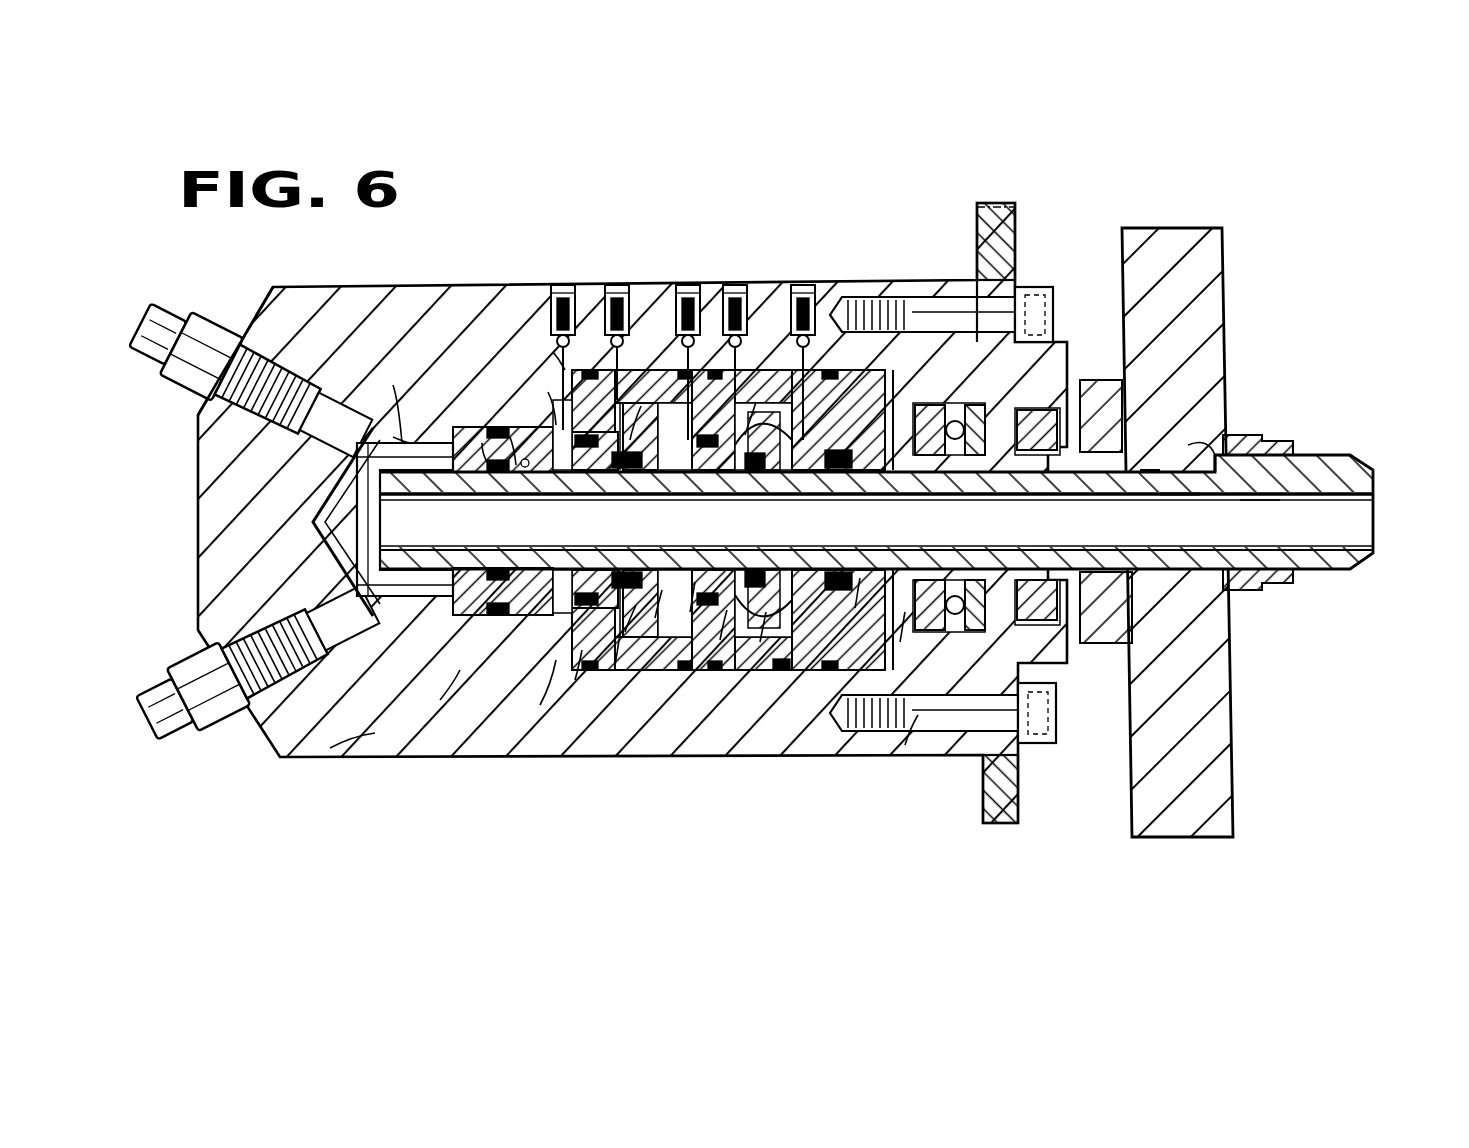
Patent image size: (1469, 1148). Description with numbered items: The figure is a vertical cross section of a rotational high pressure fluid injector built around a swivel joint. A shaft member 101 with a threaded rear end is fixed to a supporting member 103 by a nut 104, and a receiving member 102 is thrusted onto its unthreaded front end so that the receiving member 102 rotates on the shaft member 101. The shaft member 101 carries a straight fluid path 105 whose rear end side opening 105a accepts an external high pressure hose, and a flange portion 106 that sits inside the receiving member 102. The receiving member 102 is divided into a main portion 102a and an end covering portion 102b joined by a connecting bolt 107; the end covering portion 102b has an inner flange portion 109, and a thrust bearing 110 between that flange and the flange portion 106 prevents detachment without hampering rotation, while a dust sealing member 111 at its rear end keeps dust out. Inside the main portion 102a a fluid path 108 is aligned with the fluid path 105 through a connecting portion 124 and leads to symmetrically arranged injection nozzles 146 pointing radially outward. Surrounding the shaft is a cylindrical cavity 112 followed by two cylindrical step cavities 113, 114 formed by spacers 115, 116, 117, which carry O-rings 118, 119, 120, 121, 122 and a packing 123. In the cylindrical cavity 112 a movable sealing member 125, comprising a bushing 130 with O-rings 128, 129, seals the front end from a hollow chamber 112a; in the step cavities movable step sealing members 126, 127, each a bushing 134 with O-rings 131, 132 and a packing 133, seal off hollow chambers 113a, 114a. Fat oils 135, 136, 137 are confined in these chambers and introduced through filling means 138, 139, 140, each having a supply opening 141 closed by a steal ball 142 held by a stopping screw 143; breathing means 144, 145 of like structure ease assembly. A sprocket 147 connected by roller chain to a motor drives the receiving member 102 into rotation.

The shaft member 101 is at (1188, 445).
The receiving member 102 is at (256, 296).
The main portion 102a is at (302, 312).
The end covering portion 102b is at (985, 235).
The supporting member 103 is at (1187, 277).
The nut 104 is at (1247, 447).
The fluid path 105 is at (1432, 536).
The rear end side opening 105a is at (1337, 537).
The flange portion 106 is at (965, 292).
The connecting bolt 107 is at (1012, 327).
The fluid path 108 is at (300, 580).
The inner flange portion 109 is at (1185, 492).
The thrust bearing 110 is at (1214, 473).
The dust sealing member 111 is at (1255, 500).
The cylindrical cavity 112 is at (522, 437).
The hollow chamber 112a is at (330, 748).
The cylindrical step cavity 113 is at (626, 410).
The hollow chamber 113a is at (625, 632).
The cylindrical step cavity 114 is at (915, 430).
The hollow chamber 114a is at (855, 608).
The spacer 115 is at (575, 680).
The spacer 116 is at (720, 640).
The spacer 117 is at (905, 745).
The O-ring 118 is at (540, 705).
The O-ring 119 is at (615, 665).
The O-ring 120 is at (690, 612).
The O-ring 121 is at (760, 642).
The O-ring 122 is at (900, 642).
The packing 123 is at (1140, 470).
The connecting portion 124 is at (393, 437).
The movable sealing member 125 is at (465, 416).
The movable step sealing member 126 is at (697, 412).
The movable step sealing member 127 is at (1020, 465).
The O-ring 128 is at (487, 462).
The O-ring 129 is at (510, 437).
The bushing 130 is at (440, 466).
The O-ring 131 is at (592, 455).
The O-ring 132 is at (641, 406).
The packing 133 is at (681, 440).
The bushing 134 is at (800, 440).
The fat oil 135 is at (440, 700).
The fat oil 136 is at (655, 618).
The fat oil 137 is at (990, 697).
The filling means 138 is at (558, 282).
The filling means 139 is at (733, 249).
The filling means 140 is at (815, 272).
The supply opening 141 is at (393, 385).
The steal ball 142 is at (553, 352).
The stopping screw 143 is at (548, 392).
The breathing means 144 is at (614, 282).
The breathing means 145 is at (795, 249).
The injection nozzle 146 is at (165, 322).
The sprocket 147 is at (985, 308).